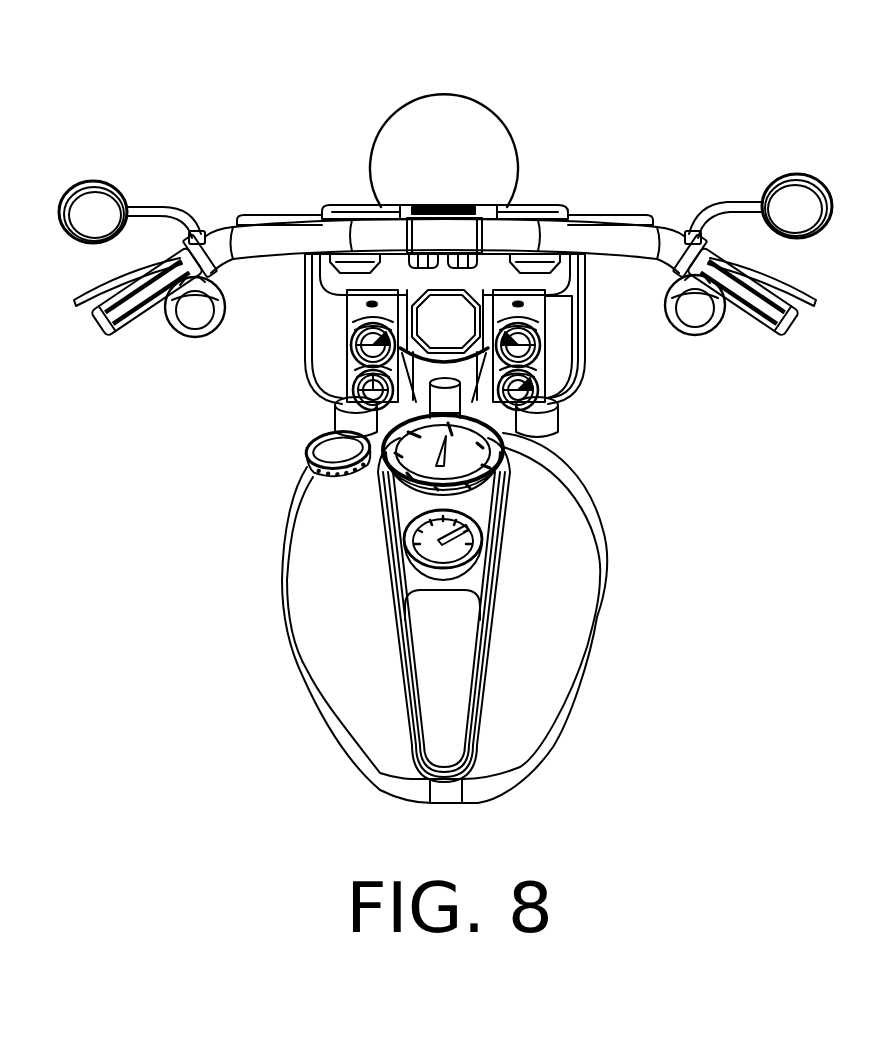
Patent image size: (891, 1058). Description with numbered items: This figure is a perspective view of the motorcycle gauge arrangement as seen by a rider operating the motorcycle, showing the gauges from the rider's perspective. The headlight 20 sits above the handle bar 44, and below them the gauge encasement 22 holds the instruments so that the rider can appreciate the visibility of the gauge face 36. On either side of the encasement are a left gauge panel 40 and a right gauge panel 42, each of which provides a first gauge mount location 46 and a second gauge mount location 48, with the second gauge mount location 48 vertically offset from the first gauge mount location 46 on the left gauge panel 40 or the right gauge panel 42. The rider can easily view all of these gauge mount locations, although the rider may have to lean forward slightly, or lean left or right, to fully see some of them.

The headlight 20 is at (404, 150).
The gauge encasement 22 is at (305, 185).
The gauge face 36 is at (543, 348).
The left gauge panel 40 is at (323, 360).
The right gauge panel 42 is at (558, 370).
The handle bar 44 is at (463, 255).
The first gauge mount location 46 is at (355, 320).
The second gauge mount location 48 is at (350, 367).